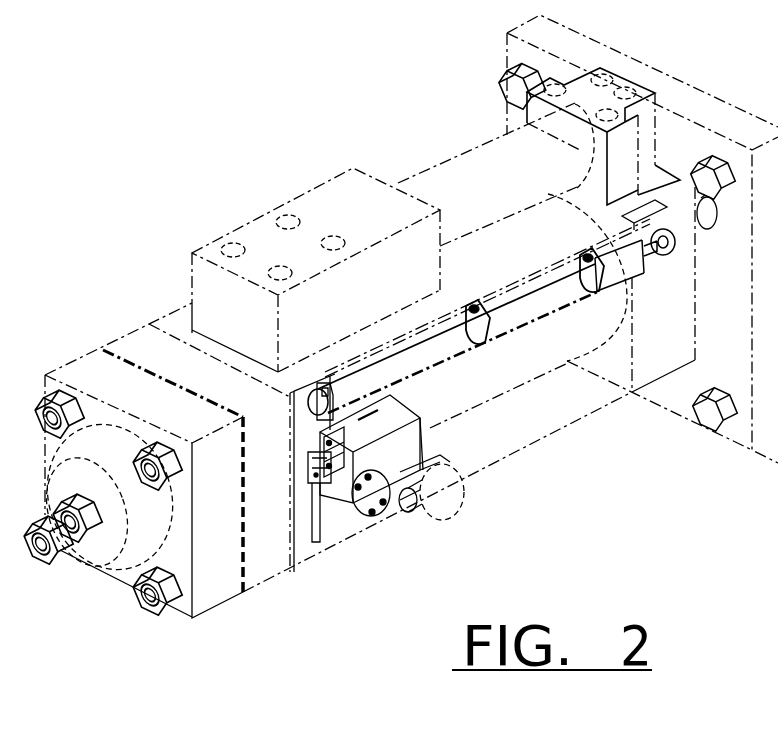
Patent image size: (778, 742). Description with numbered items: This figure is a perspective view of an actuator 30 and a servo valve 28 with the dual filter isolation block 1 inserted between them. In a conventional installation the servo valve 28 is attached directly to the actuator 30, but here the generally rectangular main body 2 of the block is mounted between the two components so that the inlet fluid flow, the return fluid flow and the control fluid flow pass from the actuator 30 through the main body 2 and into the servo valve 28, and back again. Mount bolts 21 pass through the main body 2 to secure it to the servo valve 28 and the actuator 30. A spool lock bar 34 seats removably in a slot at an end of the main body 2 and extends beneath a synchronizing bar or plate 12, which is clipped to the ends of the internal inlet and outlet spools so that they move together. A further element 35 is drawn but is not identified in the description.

The dual filter isolation block 1 is at (340, 535).
The main body 2 is at (413, 391).
The synchronizing bar or plate 12 is at (318, 473).
The mount bolts 21 is at (445, 437).
The servo valve 28 is at (477, 471).
The actuator 30 is at (120, 338).
The spool lock bar 34 is at (357, 503).
The lever 35 is at (337, 517).